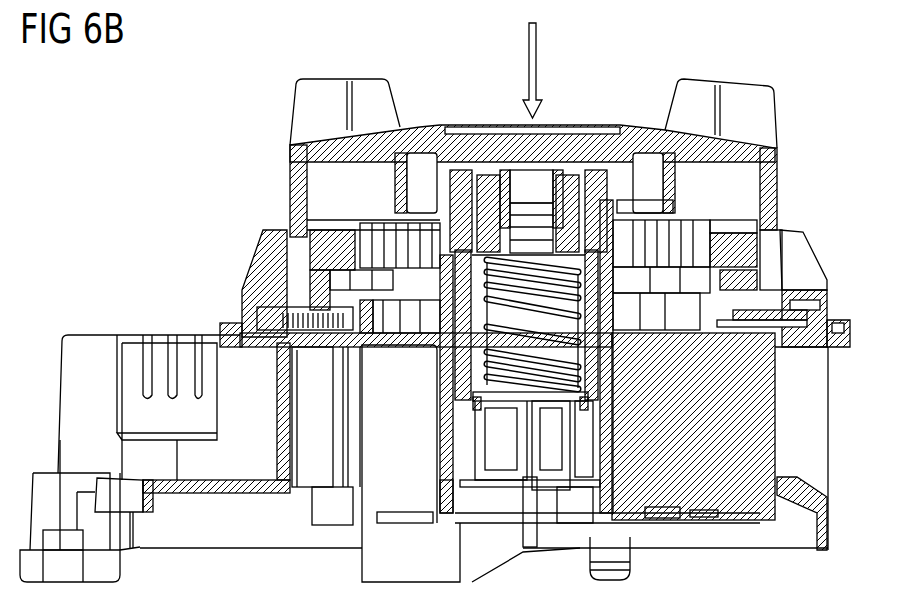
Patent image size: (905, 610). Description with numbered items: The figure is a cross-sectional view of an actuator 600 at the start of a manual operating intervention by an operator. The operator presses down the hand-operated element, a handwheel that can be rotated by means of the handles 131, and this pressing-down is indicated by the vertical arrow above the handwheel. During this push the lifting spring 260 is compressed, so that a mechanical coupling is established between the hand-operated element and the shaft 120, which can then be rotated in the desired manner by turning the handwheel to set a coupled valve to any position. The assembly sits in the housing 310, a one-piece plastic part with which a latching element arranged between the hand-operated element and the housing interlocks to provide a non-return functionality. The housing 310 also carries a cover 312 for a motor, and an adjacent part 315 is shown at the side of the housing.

The actuator 600 is at (136, 146).
The handles 131 is at (323, 95).
The cover part 315 is at (807, 262).
The cover 312 is at (100, 352).
The housing 310 is at (760, 438).
The shaft 120 is at (520, 342).
The lifting spring 260 is at (485, 398).